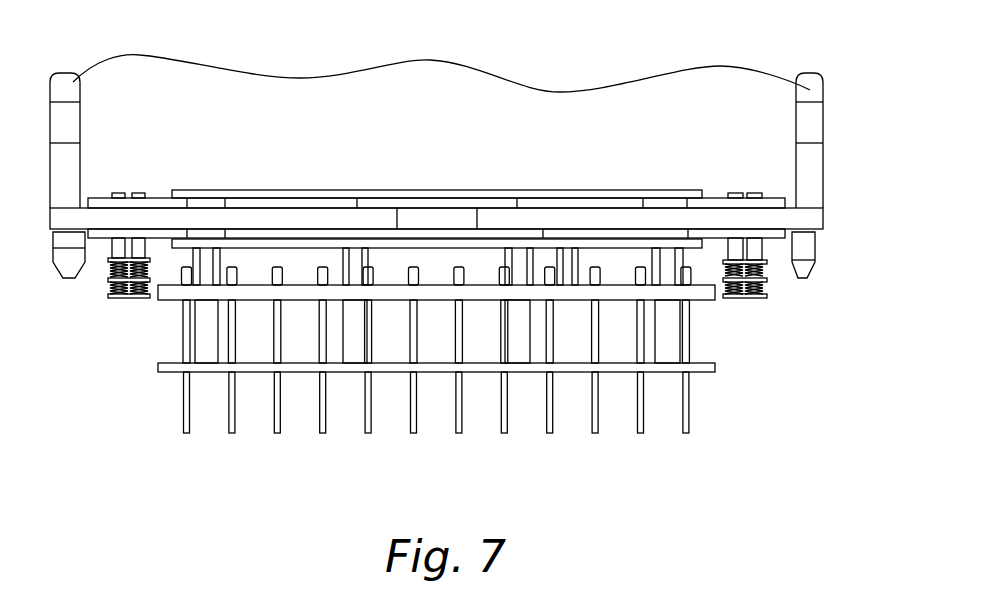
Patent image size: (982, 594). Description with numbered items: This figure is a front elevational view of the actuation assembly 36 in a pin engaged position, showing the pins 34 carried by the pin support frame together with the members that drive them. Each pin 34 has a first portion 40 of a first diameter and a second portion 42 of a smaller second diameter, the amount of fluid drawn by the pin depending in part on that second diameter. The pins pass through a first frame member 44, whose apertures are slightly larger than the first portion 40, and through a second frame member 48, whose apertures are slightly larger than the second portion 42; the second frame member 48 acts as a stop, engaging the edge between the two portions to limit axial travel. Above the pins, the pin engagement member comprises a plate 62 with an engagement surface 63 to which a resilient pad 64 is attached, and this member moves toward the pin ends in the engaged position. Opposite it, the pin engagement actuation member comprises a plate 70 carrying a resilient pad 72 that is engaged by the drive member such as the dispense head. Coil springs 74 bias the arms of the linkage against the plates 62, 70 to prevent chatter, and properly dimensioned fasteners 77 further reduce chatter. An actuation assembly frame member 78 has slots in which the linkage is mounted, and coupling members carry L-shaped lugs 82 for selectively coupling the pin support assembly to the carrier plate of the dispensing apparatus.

The actuation assembly 36 is at (703, 48).
The L-shaped ears or lugs 82 is at (441, 65).
The resilient member or pad 72 is at (465, 190).
The plate 70 is at (707, 196).
The fasteners 77 is at (138, 245).
The actuation assembly frame member 78 is at (825, 218).
The plate 62 is at (787, 237).
The engagement surface 63 is at (778, 246).
The resilient member or pad 64 is at (703, 246).
The first frame member 44 is at (723, 298).
The leaf springs or coil springs 74 is at (110, 278).
The first portion 40 is at (181, 314).
The pins 34 is at (160, 350).
The second frame member 48 is at (717, 372).
The second portion 42 is at (184, 416).